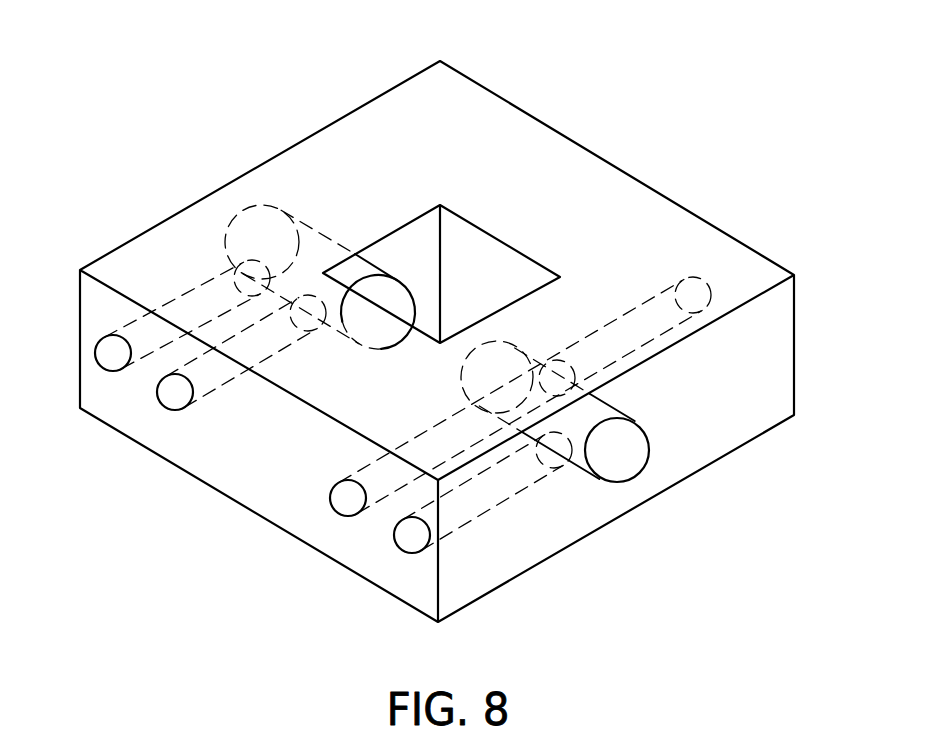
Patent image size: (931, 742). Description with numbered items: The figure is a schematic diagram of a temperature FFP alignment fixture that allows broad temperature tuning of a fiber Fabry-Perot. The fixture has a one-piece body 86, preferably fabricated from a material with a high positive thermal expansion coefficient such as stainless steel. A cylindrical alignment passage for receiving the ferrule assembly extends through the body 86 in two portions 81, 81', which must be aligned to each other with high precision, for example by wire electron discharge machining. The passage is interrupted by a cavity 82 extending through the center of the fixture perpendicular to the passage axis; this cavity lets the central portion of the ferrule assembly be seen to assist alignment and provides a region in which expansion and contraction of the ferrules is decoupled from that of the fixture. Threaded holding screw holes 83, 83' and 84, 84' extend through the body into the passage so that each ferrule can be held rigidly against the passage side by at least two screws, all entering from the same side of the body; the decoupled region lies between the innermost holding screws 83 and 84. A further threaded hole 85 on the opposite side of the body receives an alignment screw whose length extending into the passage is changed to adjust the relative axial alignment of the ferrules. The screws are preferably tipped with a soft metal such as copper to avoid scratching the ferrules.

The alignment passage portion 81 is at (304, 245).
The alignment passage portion 81' is at (561, 455).
The cavity 82 is at (478, 260).
The holding screw hole 83 is at (206, 382).
The holding screw hole 83' is at (152, 344).
The holding screw hole 84 is at (490, 430).
The holding screw hole 84' is at (454, 528).
The alignment screw hole 85 is at (702, 293).
The fixture body 86 is at (777, 370).